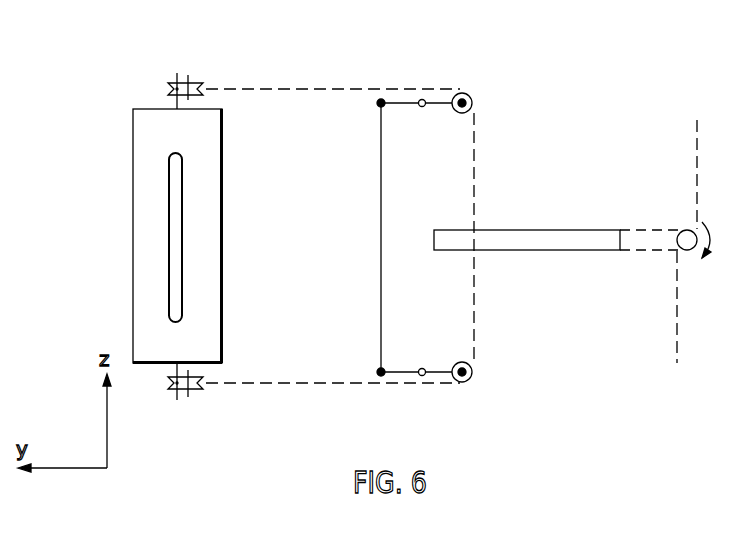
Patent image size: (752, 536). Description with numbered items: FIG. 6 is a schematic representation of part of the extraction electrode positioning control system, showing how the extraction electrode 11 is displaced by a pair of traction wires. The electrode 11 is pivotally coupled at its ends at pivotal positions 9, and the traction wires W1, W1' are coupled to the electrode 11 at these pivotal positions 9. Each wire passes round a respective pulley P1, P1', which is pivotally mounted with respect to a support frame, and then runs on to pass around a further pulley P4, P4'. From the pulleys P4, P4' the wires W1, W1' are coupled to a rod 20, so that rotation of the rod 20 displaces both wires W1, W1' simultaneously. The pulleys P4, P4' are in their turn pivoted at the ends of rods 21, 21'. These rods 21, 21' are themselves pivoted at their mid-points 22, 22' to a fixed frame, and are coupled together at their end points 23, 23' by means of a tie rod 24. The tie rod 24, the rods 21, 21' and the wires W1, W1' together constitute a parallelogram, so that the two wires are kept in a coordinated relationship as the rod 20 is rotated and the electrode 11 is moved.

The pivotal position 9 is at (172, 104).
The extraction electrode 11 is at (223, 217).
The rod 20 is at (538, 230).
The rod 21 is at (416, 350).
The rod 21' is at (416, 133).
The mid-point pivot 22 is at (413, 398).
The mid-point pivot 22' is at (411, 70).
The end point 23 is at (358, 352).
The end point 23' is at (357, 119).
The tie rod 24 is at (380, 250).
The pulley P1 is at (203, 407).
The pulley P1' is at (203, 58).
The pulley P4 is at (478, 397).
The pulley P4' is at (479, 200).
The traction wire W1 is at (441, 342).
The traction wire W1' is at (458, 145).